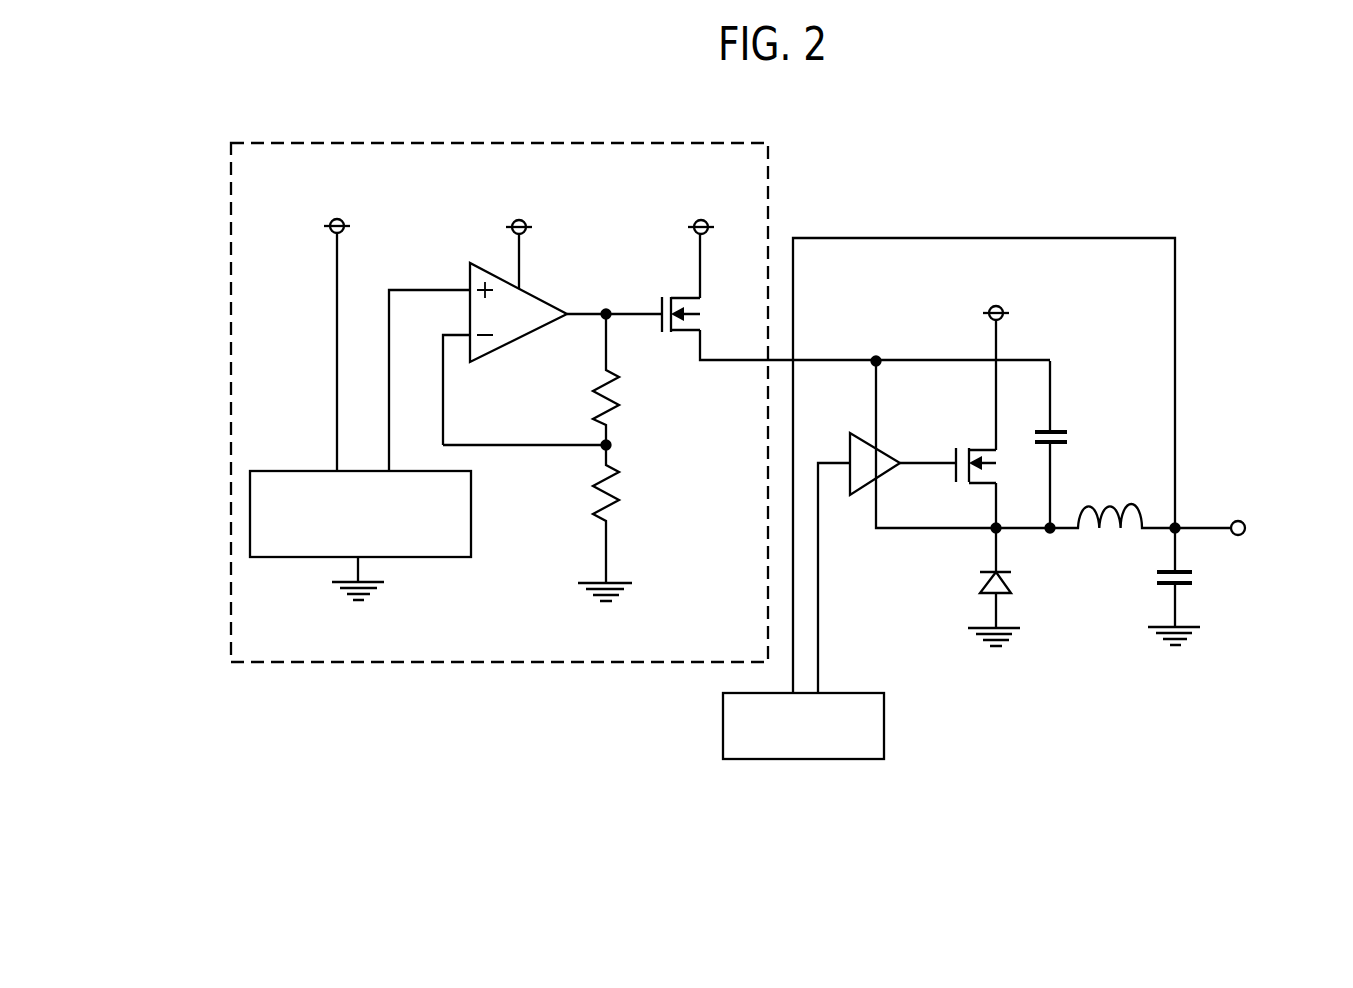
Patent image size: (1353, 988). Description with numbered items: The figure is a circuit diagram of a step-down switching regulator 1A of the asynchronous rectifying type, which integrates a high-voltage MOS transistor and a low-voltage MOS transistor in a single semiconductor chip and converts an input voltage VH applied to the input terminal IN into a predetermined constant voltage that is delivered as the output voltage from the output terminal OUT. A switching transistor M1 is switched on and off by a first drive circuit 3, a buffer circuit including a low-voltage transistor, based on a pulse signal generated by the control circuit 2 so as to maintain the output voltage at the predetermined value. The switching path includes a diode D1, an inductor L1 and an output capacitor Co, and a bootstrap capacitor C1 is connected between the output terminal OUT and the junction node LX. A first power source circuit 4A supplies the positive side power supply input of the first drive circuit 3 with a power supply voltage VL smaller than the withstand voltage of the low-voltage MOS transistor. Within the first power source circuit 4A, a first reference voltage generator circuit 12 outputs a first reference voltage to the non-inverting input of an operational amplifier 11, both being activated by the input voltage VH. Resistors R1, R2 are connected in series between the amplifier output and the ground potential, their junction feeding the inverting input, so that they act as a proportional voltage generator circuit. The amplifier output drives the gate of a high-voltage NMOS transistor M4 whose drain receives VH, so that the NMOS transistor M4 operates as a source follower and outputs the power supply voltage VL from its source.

The first power source circuit 4A is at (678, 132).
The step-down switching regulator 1A is at (1004, 204).
The operational amplifier 11 is at (540, 298).
The first reference voltage generator circuit 12 is at (471, 492).
The control circuit 2 is at (884, 713).
The first drive circuit 3 is at (886, 454).
The NMOS transistor M4 is at (855, 290).
The switching transistor M1 is at (961, 424).
The resistor R1 is at (549, 382).
The resistor R2 is at (616, 537).
The bootstrap capacitor C1 is at (1068, 447).
The inductor L1 is at (1112, 500).
The output capacitor Co is at (1186, 585).
The diode D1 is at (1006, 587).
The input terminal IN is at (1002, 319).
The junction node LX is at (990, 532).
The output terminal OUT is at (1245, 532).